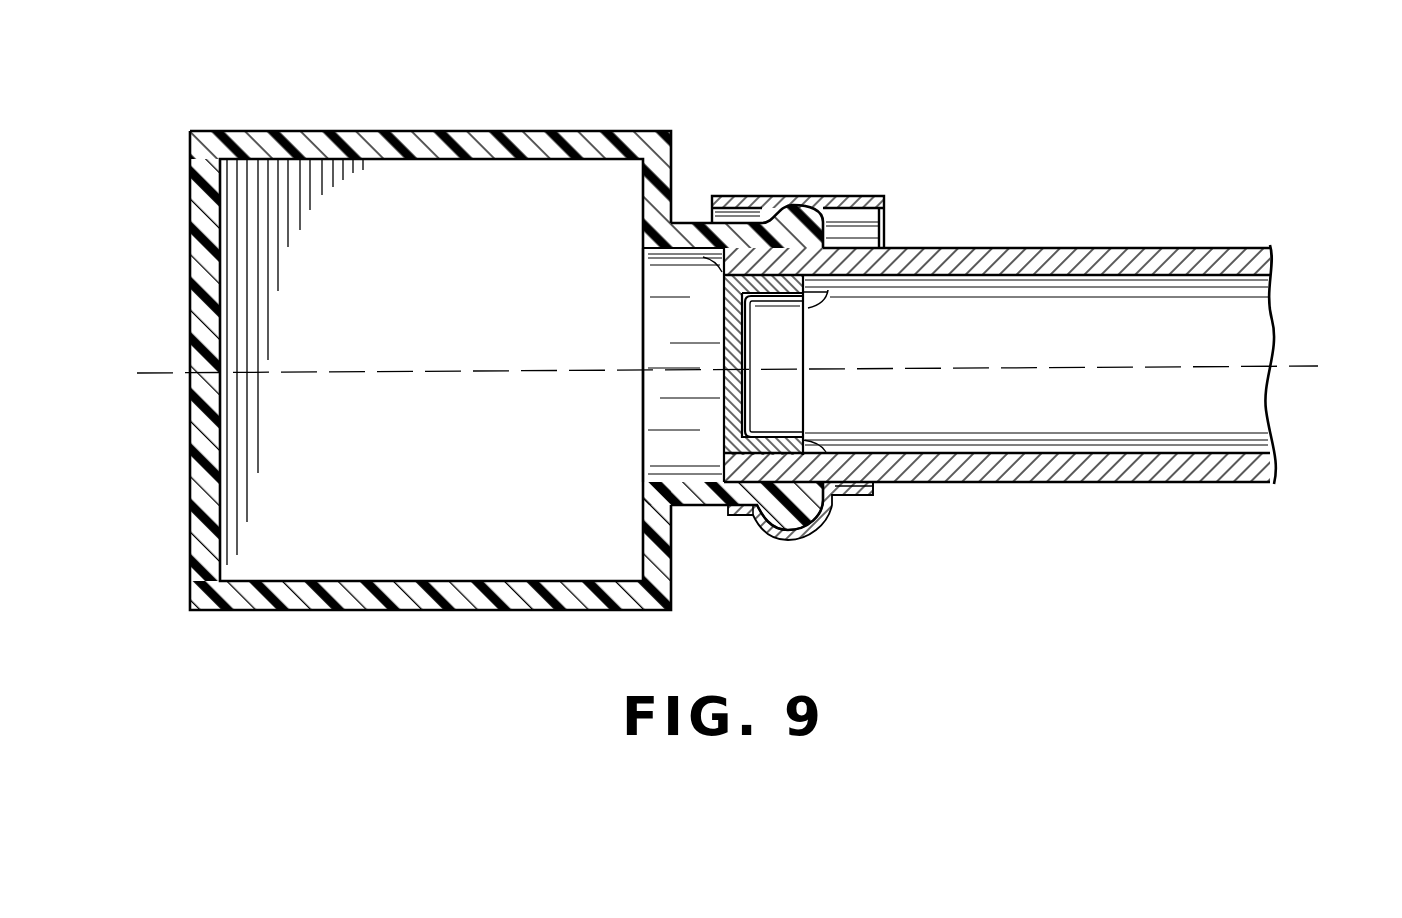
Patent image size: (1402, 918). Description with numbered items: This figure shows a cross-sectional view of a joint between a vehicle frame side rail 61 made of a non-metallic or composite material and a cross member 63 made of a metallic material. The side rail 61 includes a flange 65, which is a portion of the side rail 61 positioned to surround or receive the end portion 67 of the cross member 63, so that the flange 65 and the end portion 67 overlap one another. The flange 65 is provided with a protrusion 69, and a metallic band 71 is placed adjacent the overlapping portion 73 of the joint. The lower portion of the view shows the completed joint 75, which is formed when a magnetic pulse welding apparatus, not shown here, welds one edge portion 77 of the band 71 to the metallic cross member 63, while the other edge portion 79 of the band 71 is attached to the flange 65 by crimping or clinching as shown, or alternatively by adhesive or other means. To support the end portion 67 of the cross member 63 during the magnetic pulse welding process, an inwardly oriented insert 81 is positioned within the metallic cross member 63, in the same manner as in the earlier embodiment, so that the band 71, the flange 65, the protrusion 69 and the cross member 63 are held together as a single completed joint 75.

The side rail 61 is at (425, 130).
The cross member 63 is at (1092, 245).
The flange 65 is at (668, 253).
The end portion 67 is at (720, 268).
The protrusion 69 is at (812, 218).
The metallic band 71 is at (763, 192).
The overlapping portion 73 is at (788, 319).
The completed joint 75 is at (834, 540).
The edge portion 77 is at (864, 495).
The edge portion 79 is at (765, 522).
The insert 81 is at (737, 352).